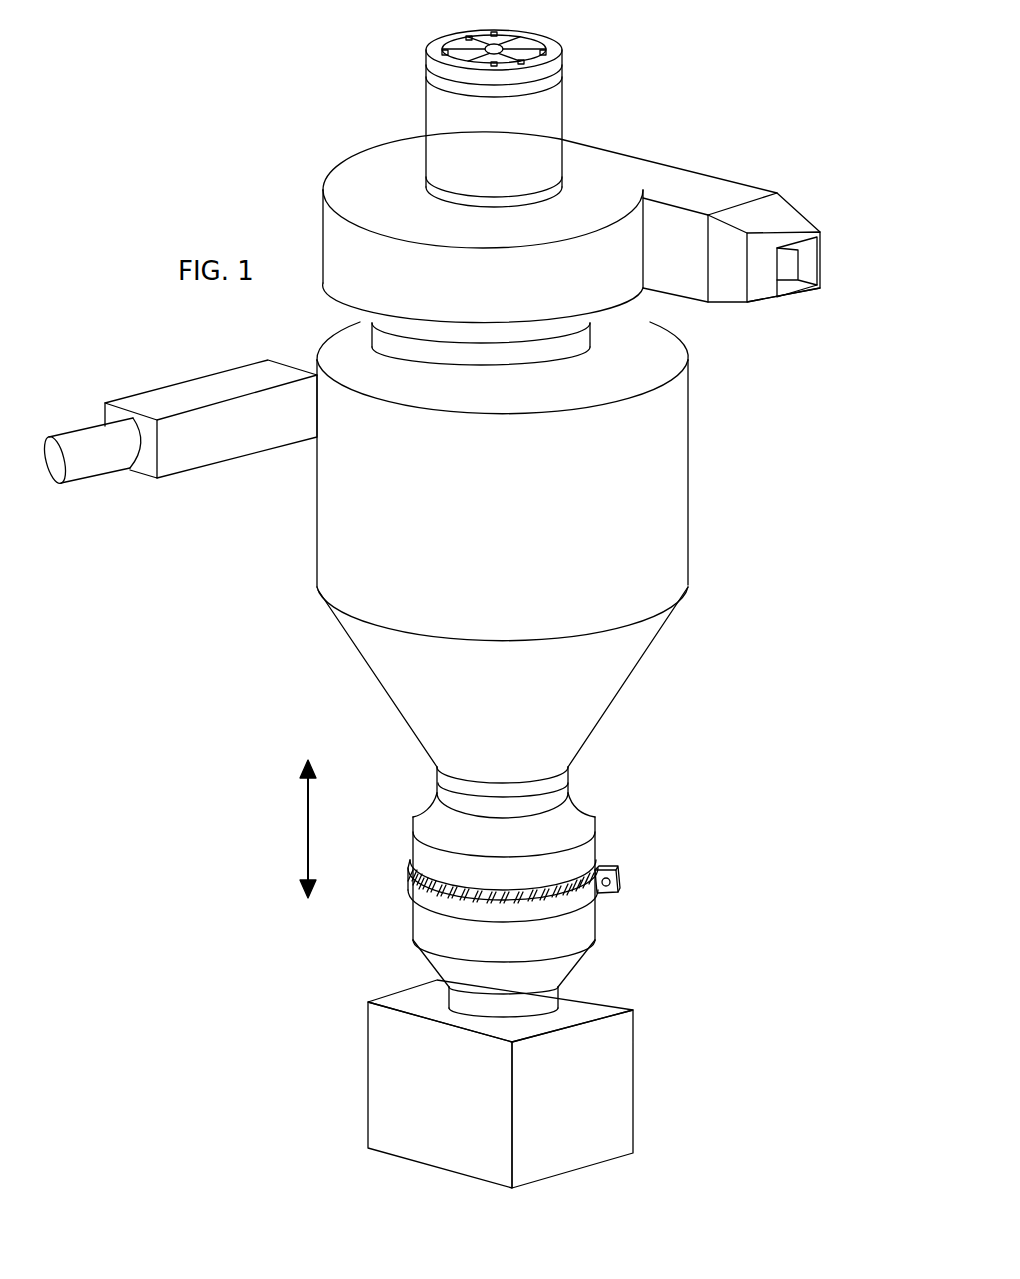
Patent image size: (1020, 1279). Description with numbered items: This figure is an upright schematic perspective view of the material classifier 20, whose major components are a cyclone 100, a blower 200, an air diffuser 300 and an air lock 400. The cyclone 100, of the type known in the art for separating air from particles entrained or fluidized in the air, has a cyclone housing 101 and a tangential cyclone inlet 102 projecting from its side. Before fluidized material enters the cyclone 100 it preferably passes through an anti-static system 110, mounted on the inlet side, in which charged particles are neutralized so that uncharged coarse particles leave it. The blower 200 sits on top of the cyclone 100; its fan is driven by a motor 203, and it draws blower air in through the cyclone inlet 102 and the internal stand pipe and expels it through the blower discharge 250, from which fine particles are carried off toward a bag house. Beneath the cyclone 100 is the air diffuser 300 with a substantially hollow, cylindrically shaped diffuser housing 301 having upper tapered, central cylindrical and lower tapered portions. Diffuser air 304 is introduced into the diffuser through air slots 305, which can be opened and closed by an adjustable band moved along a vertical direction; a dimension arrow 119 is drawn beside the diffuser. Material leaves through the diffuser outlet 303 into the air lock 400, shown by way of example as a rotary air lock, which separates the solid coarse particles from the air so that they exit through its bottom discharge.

The material classifier 20 is at (240, 100).
The blower 200 is at (672, 108).
The motor 203 is at (538, 123).
The blower discharge 250 is at (800, 280).
The cyclone 100 is at (190, 643).
The cyclone housing 101 is at (668, 507).
The tangential cyclone inlet 102 is at (317, 366).
The anti-static system 110 is at (187, 457).
The height dimension 119 is at (300, 826).
The air diffuser 300 is at (168, 940).
The diffuser housing 301 is at (590, 838).
The air slots 305 is at (597, 847).
The diffuser air 304 is at (577, 898).
The diffuser outlet 303 is at (540, 1003).
The air lock 400 is at (672, 1087).